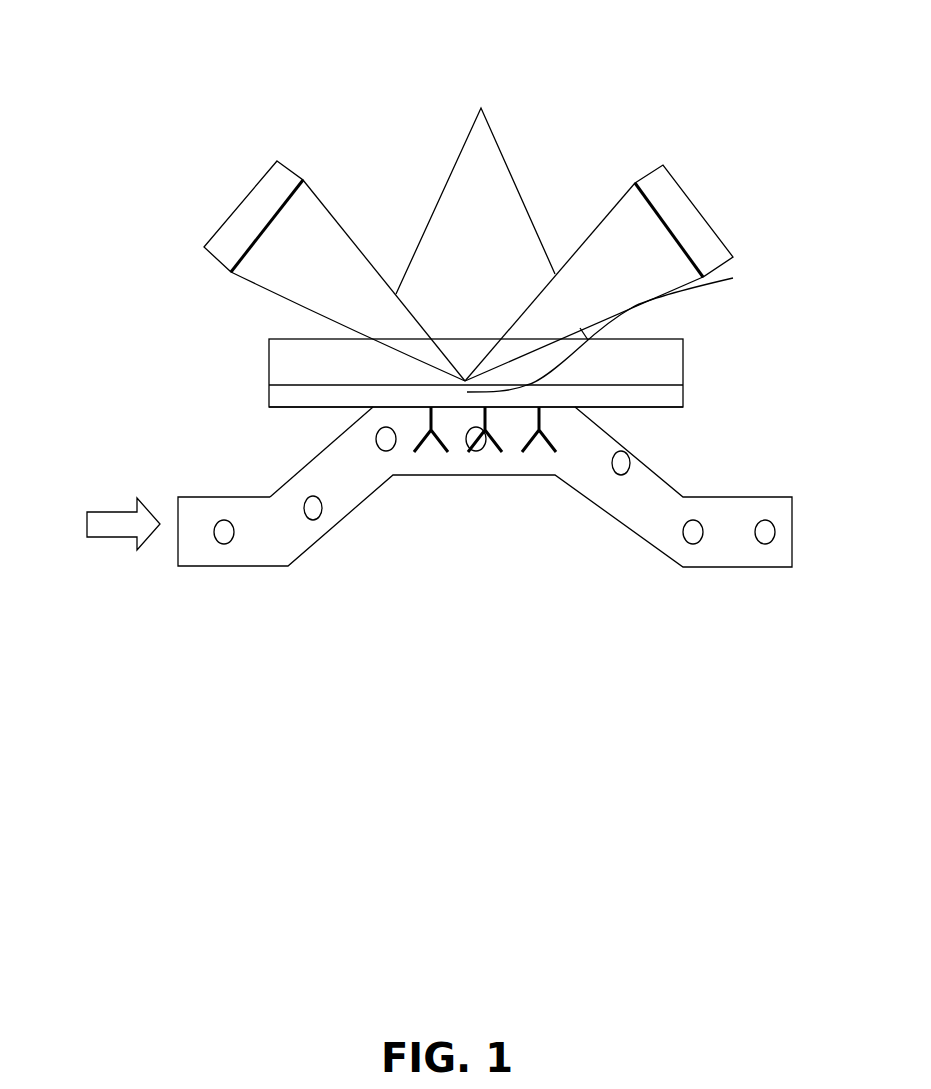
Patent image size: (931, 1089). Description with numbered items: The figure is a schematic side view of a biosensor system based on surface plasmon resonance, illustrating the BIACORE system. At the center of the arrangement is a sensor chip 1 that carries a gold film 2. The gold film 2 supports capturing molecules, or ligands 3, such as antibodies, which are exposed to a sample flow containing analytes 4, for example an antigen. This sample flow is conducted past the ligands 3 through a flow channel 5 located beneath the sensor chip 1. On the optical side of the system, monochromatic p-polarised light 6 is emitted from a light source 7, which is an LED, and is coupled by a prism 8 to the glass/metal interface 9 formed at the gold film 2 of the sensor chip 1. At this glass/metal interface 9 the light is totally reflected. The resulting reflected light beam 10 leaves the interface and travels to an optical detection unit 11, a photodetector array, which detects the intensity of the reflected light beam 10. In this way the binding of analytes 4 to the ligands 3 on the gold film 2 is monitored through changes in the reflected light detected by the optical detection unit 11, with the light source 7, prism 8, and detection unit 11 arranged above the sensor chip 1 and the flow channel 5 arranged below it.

The sensor chip 1 is at (260, 353).
The gold film 2 is at (288, 398).
The capturing molecules (ligands) 3 is at (437, 447).
The analytes 4 is at (227, 542).
The flow channel 5 is at (192, 542).
The monochromatic p-polarised light 6 is at (327, 253).
The light source 7 is at (245, 226).
The prism 8 is at (478, 222).
The glass/metal interface 9 is at (615, 335).
The reflected light beam 10 is at (612, 237).
The optical detection unit 11 is at (690, 222).